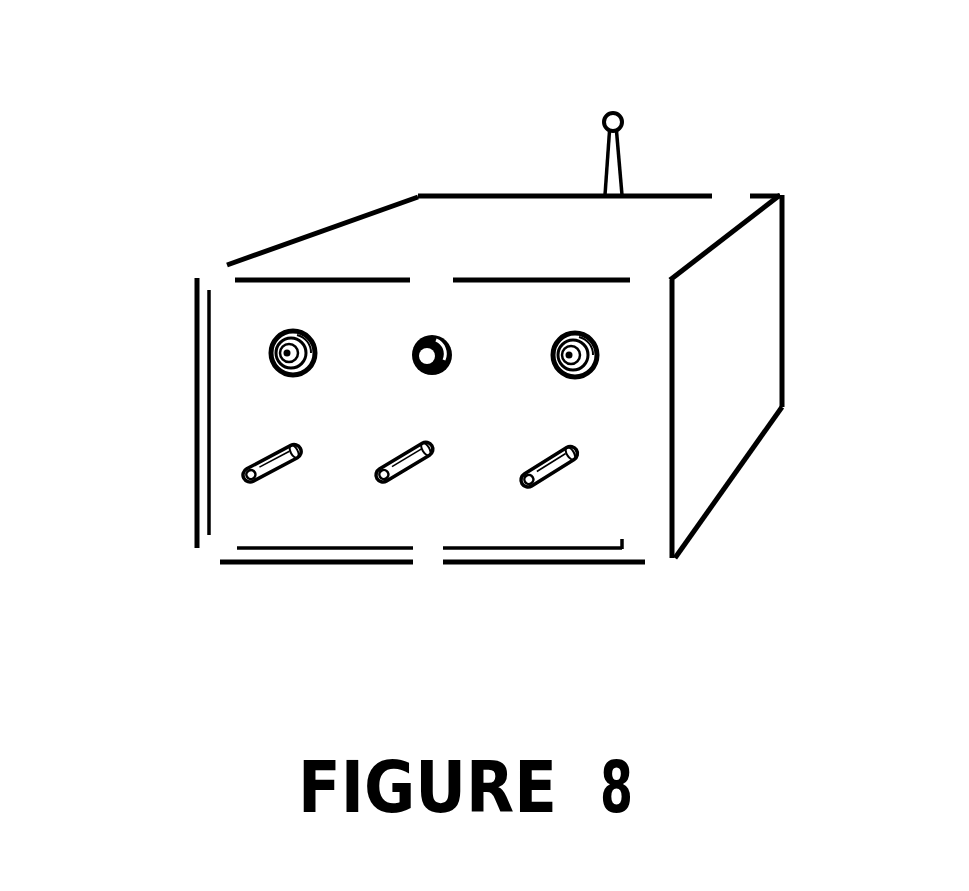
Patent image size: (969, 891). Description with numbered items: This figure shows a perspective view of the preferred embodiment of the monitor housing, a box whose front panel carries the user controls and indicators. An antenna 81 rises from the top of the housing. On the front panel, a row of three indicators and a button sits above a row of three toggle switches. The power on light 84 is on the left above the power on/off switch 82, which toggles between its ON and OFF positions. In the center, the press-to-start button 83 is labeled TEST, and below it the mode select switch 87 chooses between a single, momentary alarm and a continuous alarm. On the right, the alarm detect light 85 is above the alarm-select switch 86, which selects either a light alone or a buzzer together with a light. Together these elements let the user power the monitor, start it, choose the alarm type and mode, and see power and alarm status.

The antenna 81 is at (638, 147).
The power on/off switch 82 is at (260, 507).
The press-to-start button 83 is at (432, 287).
The power on light 84 is at (263, 325).
The alarm detect light 85 is at (603, 323).
The alarm-select switch 86 is at (625, 530).
The mode select switch 87 is at (429, 527).